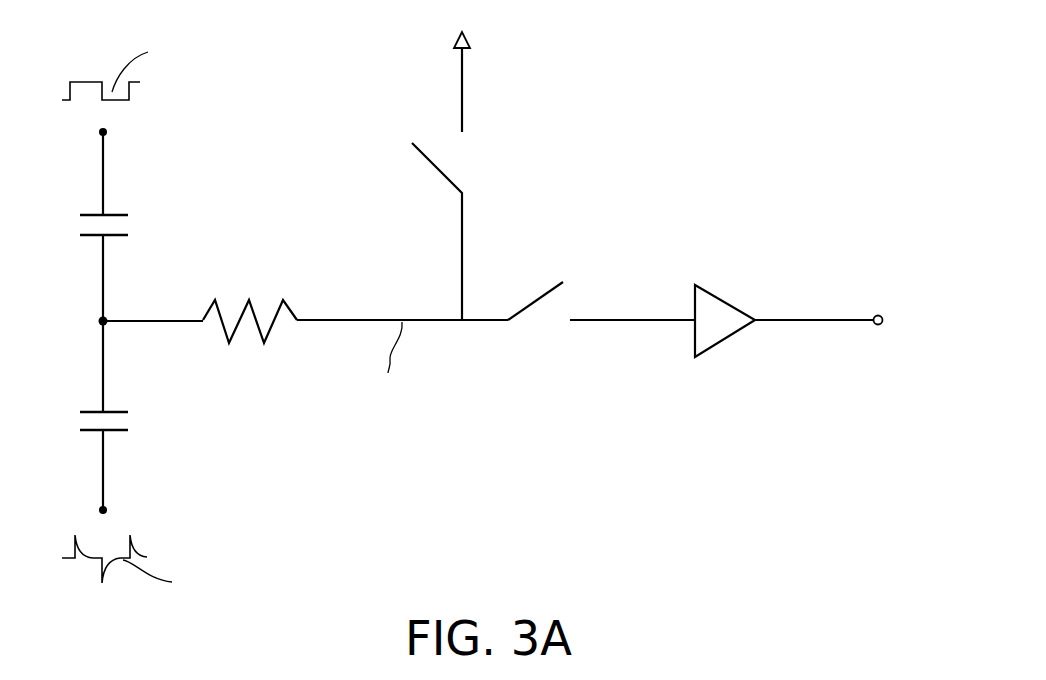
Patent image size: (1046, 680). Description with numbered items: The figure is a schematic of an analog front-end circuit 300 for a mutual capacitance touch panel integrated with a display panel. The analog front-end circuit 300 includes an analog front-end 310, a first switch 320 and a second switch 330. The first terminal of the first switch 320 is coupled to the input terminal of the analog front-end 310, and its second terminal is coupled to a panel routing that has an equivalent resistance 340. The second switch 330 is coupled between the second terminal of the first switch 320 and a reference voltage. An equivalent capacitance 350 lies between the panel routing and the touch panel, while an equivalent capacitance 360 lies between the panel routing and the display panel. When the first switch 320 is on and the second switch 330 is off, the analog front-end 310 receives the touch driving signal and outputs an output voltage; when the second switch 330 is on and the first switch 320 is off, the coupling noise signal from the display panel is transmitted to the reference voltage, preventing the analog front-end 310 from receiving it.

The analog front-end circuit 300 is at (503, 299).
The analog front-end 310 is at (725, 328).
The first switch 320 is at (543, 318).
The second switch 330 is at (463, 158).
The equivalent resistance 340 is at (253, 297).
The equivalent capacitance 350 is at (128, 222).
The equivalent capacitance 360 is at (137, 420).